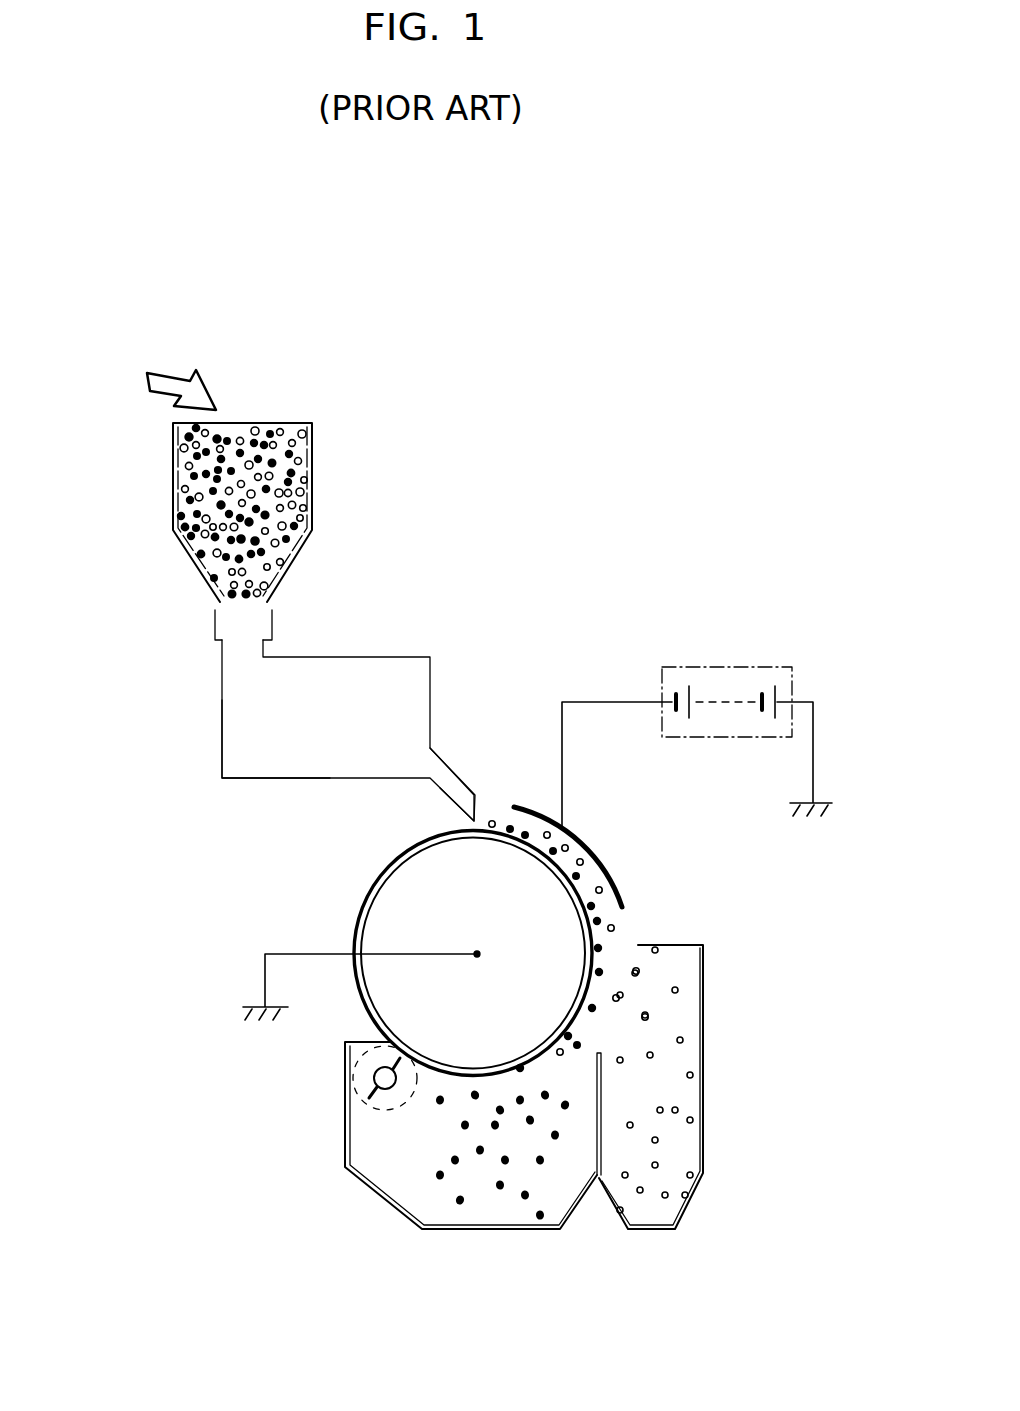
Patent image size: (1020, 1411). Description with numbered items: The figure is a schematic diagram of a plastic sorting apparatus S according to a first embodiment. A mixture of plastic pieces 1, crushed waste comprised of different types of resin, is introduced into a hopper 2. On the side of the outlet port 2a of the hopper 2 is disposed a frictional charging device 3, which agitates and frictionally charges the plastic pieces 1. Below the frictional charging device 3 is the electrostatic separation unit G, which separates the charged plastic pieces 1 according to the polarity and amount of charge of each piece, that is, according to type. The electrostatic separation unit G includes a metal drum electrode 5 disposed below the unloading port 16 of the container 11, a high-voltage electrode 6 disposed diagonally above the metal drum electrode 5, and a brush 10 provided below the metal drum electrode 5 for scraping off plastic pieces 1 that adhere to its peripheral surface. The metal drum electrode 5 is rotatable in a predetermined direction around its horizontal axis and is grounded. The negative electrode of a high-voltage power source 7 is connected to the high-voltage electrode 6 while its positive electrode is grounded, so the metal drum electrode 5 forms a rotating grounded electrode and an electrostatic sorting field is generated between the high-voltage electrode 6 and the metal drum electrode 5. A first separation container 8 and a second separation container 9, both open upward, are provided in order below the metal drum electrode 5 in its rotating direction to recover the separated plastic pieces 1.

The plastic pieces 1 is at (250, 430).
The hopper 2 is at (312, 452).
The outlet port 2a is at (215, 617).
The frictional charging device 3 is at (366, 656).
The metal drum electrode 5 is at (376, 880).
The high-voltage electrode 6 is at (612, 872).
The high-voltage power source 7 is at (752, 667).
The first separation container 8 is at (705, 1108).
The second separation container 9 is at (375, 1200).
The brush 10 is at (373, 1082).
The container 11 is at (220, 780).
The unloading port 16 is at (440, 746).
The plastic sorting apparatus S is at (511, 714).
The electrostatic separation unit G is at (622, 912).